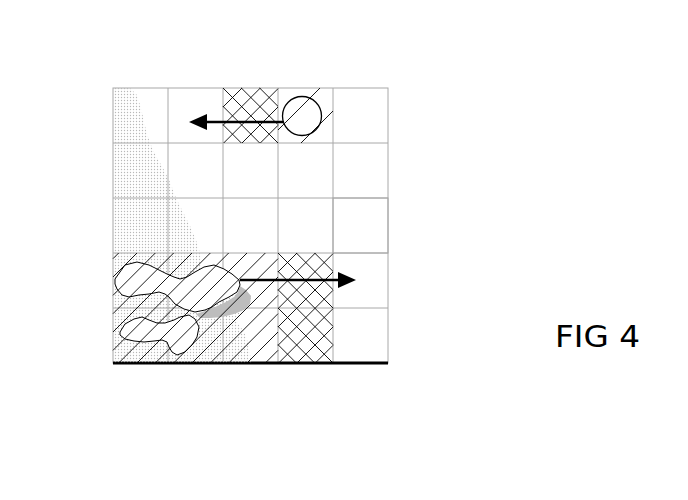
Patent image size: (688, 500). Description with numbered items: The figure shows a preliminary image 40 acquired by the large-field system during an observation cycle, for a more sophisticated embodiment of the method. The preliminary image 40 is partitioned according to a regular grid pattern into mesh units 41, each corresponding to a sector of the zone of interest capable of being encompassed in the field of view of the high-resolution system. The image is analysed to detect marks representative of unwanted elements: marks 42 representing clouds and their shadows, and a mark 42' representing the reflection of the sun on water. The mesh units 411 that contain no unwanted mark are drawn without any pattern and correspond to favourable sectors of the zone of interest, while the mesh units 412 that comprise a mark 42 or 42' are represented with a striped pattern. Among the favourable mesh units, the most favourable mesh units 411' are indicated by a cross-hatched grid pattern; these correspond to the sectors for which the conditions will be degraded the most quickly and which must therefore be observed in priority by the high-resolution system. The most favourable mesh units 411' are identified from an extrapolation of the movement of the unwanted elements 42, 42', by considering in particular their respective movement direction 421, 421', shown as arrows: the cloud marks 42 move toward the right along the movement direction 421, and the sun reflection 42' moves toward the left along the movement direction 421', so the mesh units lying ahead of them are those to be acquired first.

The preliminary image 40 is at (231, 242).
The mesh unit 41 is at (370, 92).
The mesh unit comprising no unwanted mark 411 is at (406, 225).
The most favourable mesh unit 411' is at (253, 83).
The mesh unit comprising an unwanted mark 412 is at (195, 345).
The mark representative of clouds and their shadows 42 is at (137, 225).
The mark representative of the reflection of the sun on water 42' is at (316, 94).
The movement direction of the unwanted element 421 is at (298, 350).
The movement direction of the unwanted element 421' is at (217, 67).